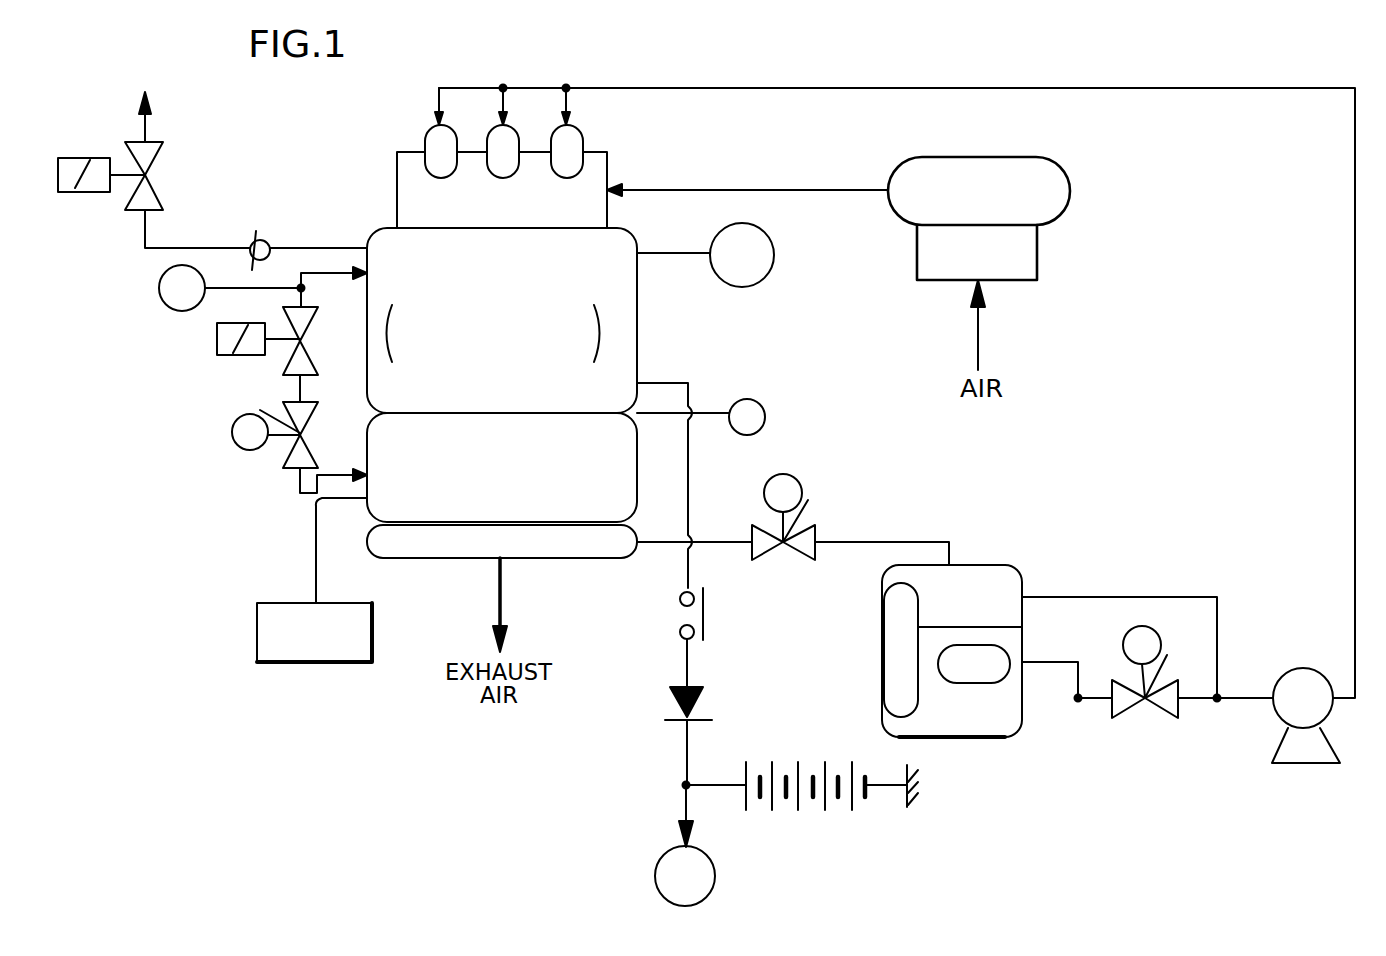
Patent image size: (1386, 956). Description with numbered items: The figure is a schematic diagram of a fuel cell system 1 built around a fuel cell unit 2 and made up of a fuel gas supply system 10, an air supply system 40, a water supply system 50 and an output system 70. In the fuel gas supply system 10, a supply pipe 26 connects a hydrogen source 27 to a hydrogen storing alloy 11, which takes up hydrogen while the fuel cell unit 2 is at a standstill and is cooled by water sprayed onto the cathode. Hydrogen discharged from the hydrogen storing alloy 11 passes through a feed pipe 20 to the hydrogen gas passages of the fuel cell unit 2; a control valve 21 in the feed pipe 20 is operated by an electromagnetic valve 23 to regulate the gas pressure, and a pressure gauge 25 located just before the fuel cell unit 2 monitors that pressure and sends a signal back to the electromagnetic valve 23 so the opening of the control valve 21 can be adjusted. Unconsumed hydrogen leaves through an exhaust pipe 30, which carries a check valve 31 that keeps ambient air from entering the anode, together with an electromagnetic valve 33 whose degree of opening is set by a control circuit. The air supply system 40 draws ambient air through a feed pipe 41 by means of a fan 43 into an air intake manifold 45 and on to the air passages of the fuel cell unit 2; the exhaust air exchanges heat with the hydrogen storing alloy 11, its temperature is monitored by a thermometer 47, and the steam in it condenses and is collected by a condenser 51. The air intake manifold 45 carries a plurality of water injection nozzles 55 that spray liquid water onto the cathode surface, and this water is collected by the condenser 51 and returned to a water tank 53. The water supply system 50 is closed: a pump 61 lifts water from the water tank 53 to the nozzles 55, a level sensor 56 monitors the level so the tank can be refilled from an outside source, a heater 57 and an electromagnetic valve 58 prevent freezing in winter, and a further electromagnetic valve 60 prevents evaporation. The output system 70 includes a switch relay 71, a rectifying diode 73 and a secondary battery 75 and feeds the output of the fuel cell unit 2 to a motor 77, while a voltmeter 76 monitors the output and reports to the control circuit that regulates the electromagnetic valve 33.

The fuel cell system 1 is at (934, 80).
The fuel cell unit 2 is at (637, 323).
The fuel gas supply system 10 is at (205, 493).
The hydrogen storing alloy 11 is at (377, 503).
The feed pipe 20 is at (300, 488).
The control valve 21 is at (230, 433).
The electromagnetic valve 23 is at (215, 337).
The pressure gauge 25 is at (158, 288).
The supply pipe 26 is at (315, 542).
The hydrogen source 27 is at (336, 648).
The exhaust pipe 30 is at (322, 247).
The check valve 31 is at (255, 232).
The electromagnetic valve 33 is at (80, 158).
The air supply system 40 is at (1110, 191).
The air supply pipe 41 is at (753, 190).
The fan 43 is at (973, 160).
The air intake manifold 45 is at (397, 172).
The thermometer 47 is at (765, 412).
The water supply system 50 is at (1176, 548).
The condenser 51 is at (580, 550).
The water tank 53 is at (948, 738).
The water injection nozzles 55 is at (425, 135).
The level sensor 56 is at (880, 637).
The heater 57 is at (975, 645).
The electromagnetic valve 58 is at (1123, 718).
The electromagnetic valve 60 is at (787, 477).
The pump 61 is at (1300, 755).
The output system 70 is at (640, 656).
The switch relay 71 is at (703, 613).
The rectifying diode 73 is at (698, 685).
The secondary battery 75 is at (790, 803).
The voltmeter 76 is at (747, 283).
The motor 77 is at (655, 880).